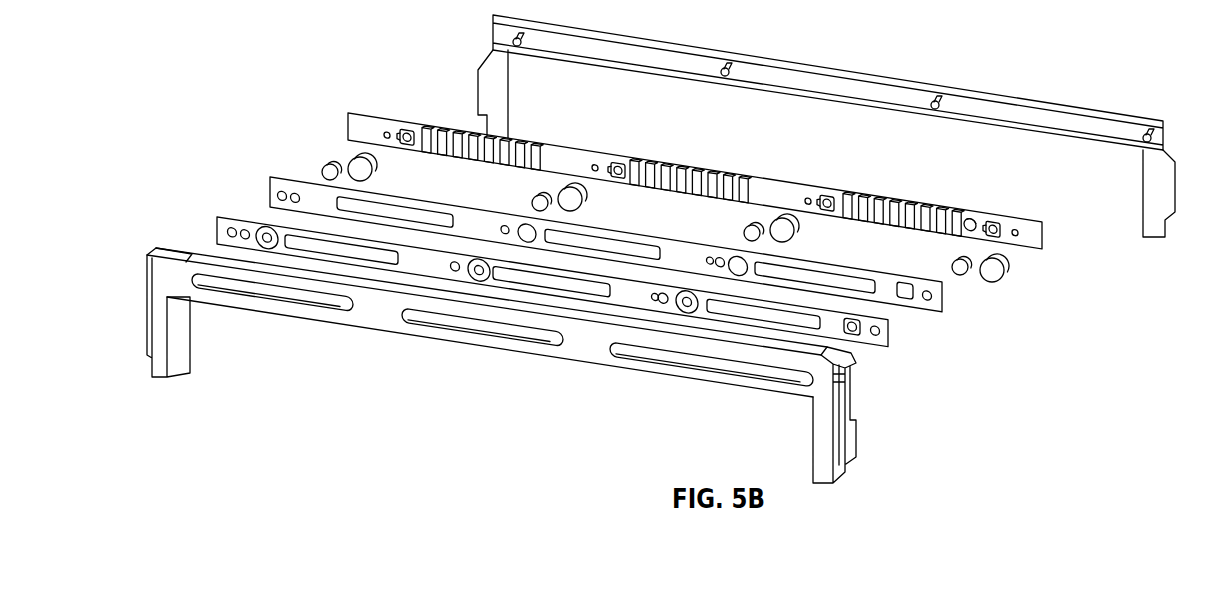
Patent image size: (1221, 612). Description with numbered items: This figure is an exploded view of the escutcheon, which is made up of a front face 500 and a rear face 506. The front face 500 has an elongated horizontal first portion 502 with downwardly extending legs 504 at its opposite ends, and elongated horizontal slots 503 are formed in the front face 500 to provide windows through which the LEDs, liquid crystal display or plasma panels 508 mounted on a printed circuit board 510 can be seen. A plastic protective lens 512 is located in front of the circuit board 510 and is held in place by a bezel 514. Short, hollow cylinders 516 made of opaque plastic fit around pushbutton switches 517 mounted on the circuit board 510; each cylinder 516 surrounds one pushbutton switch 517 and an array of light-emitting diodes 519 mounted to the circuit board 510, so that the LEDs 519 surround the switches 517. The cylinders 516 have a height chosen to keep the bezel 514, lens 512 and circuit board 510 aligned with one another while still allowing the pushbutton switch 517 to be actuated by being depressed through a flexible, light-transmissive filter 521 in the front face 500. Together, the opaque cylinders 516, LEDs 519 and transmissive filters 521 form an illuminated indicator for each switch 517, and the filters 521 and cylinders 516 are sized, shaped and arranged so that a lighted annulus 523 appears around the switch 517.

The front face 500 is at (543, 389).
The elongated horizontal first portion 502 is at (487, 361).
The elongated horizontal slots 503 is at (303, 303).
The downwardly extending legs 504 is at (178, 362).
The rear face 506 is at (1176, 216).
The LEDs, liquid crystal display or plasma panels 508 is at (474, 143).
The printed circuit board 510 is at (726, 152).
The plastic protective lens 512 is at (558, 257).
The bezel 514 is at (268, 189).
The hollow cylinders 516 is at (580, 209).
The pushbutton switches 517 is at (403, 136).
The light-emitting diodes 519 is at (388, 139).
The flexible, light-transmissive filter 521 is at (263, 237).
The lighted annulus 523 is at (262, 234).